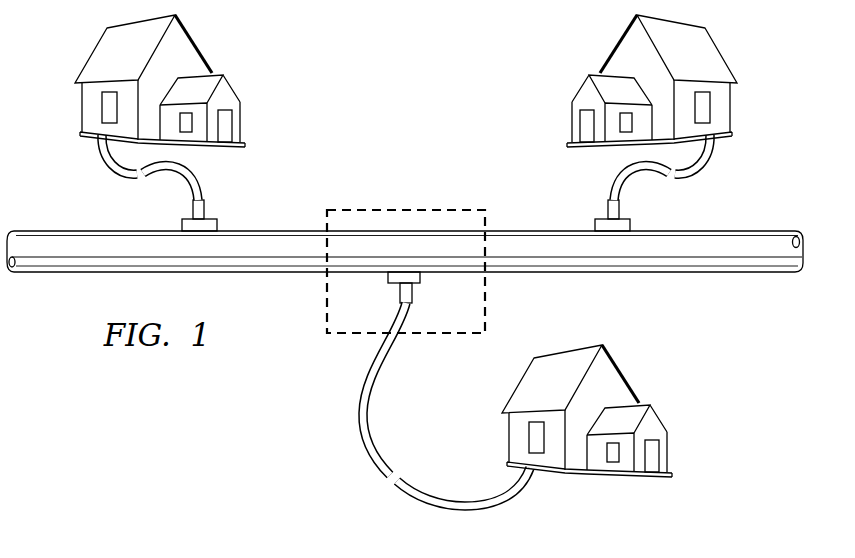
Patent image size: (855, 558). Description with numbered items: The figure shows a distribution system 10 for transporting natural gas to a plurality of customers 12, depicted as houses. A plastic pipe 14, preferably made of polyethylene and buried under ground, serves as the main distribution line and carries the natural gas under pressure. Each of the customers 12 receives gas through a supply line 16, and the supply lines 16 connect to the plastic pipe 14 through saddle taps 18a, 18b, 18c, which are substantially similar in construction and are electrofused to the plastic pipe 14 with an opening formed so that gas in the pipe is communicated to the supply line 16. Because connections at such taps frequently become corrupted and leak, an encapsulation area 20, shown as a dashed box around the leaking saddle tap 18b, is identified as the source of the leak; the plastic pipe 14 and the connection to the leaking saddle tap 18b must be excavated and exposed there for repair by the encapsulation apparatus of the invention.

The distribution system 10 is at (275, 376).
The customers 12 is at (100, 52).
The plastic pipe 14 is at (670, 266).
The supply lines 16 is at (120, 177).
The saddle tap 18a is at (205, 210).
The saddle tap 18b is at (400, 293).
The saddle tap 18c is at (608, 210).
The encapsulation area 20 is at (385, 206).